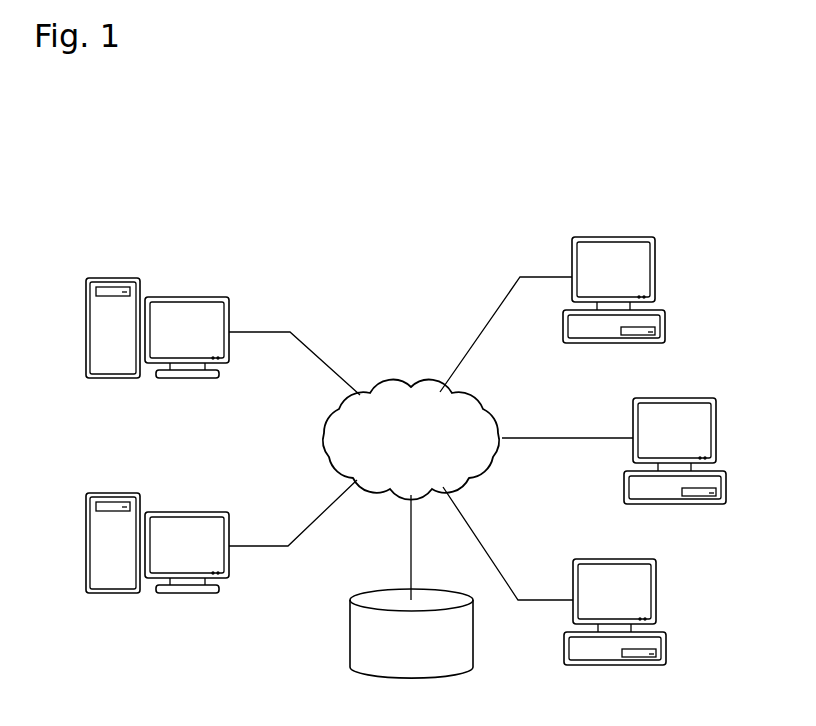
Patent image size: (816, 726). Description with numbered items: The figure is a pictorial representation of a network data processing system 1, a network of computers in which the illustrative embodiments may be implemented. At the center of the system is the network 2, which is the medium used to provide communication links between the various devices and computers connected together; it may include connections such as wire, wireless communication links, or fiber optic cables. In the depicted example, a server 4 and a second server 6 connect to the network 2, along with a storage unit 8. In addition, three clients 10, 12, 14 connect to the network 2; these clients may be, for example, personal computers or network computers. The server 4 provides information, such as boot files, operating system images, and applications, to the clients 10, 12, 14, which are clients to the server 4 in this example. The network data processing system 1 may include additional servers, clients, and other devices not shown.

The network data processing system 1 is at (297, 253).
The network 2 is at (405, 388).
The server 4 is at (86, 327).
The server 6 is at (86, 546).
The storage unit 8 is at (350, 628).
The client 10 is at (665, 325).
The client 12 is at (726, 487).
The client 14 is at (665, 650).